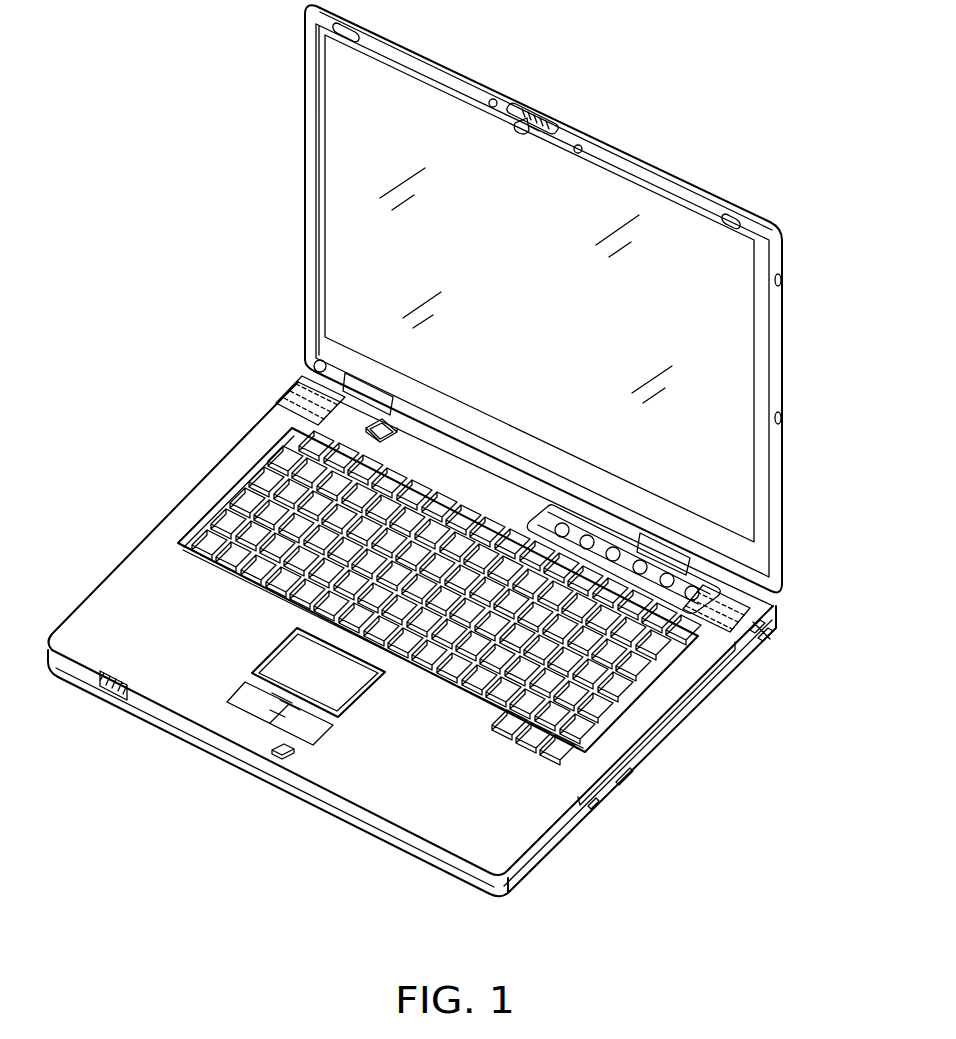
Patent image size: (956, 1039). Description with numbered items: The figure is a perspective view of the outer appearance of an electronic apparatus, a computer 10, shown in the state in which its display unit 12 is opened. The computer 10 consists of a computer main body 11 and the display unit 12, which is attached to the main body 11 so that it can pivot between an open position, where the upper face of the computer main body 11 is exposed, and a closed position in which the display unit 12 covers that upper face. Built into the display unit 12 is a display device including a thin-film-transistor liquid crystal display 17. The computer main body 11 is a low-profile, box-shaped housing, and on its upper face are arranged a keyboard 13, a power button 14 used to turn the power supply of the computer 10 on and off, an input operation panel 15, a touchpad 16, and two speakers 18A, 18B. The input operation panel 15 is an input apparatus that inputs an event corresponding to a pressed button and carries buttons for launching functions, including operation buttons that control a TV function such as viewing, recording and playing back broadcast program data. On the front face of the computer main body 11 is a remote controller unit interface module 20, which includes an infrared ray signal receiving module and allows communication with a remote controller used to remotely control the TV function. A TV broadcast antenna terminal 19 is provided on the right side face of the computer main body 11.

The computer 10 is at (745, 742).
The computer main body 11 is at (542, 860).
The display unit 12 is at (774, 440).
The keyboard 13 is at (590, 697).
The power button 14 is at (372, 430).
The input operation panel 15 is at (633, 556).
The touchpad 16 is at (278, 679).
The thin-film-transistor liquid crystal display (TFT-LCD) 17 is at (732, 320).
The speaker 18A is at (297, 384).
The speaker 18B is at (769, 598).
The TV broadcast antenna terminal 19 is at (763, 630).
The remote controller unit interface module 20 is at (116, 698).